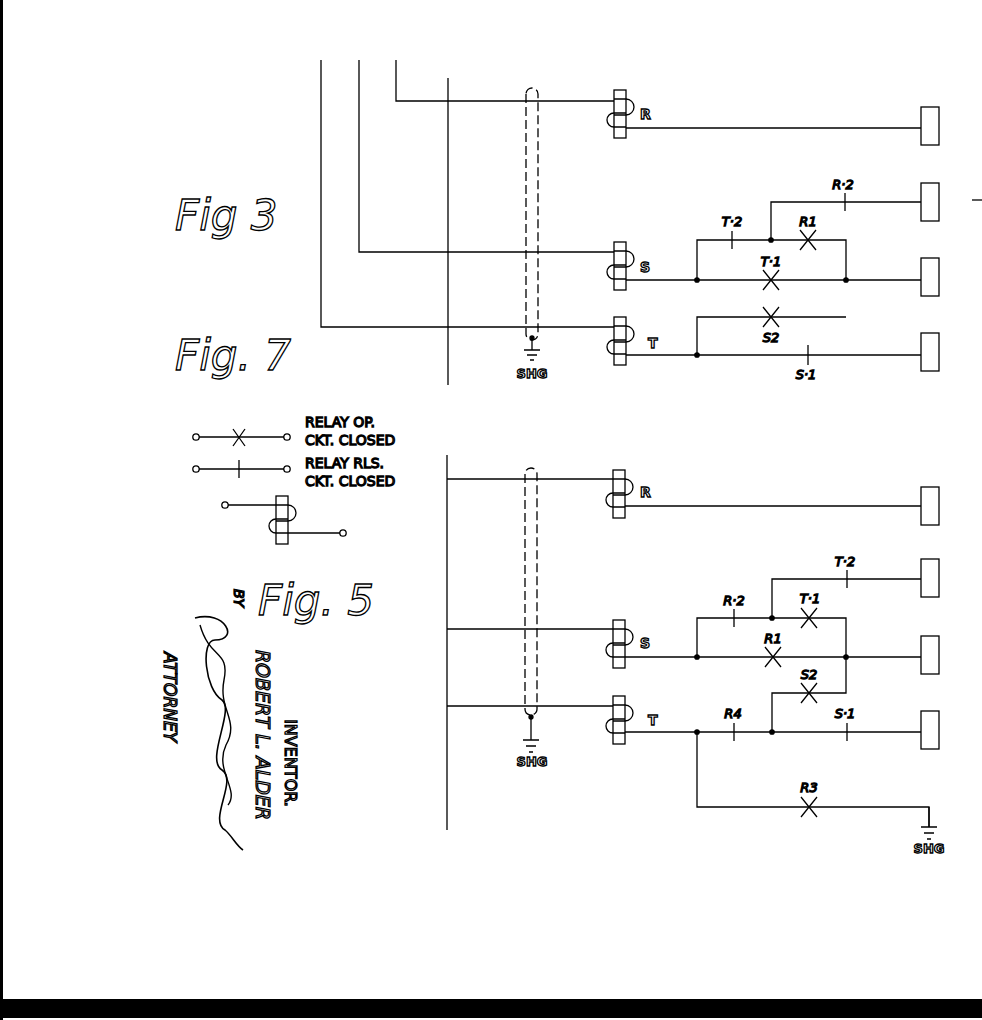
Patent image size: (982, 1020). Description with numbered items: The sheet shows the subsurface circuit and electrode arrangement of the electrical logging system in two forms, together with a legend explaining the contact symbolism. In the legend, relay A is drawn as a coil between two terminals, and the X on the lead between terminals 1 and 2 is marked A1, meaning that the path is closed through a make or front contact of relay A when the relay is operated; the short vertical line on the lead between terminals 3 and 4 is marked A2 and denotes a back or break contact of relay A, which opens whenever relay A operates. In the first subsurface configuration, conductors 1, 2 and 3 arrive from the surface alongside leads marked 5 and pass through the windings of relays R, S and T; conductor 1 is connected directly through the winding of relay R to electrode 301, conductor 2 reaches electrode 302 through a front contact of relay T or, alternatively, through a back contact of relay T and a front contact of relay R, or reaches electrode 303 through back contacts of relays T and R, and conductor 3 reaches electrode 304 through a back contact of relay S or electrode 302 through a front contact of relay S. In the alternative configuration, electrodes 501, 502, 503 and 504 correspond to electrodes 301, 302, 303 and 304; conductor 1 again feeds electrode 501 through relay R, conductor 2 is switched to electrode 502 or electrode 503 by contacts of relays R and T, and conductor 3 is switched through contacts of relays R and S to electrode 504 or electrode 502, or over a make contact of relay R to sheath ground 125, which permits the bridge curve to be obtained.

In FIG. 3, the conductor 1 is at (396, 108).
In FIG. 7, the conductor 1 is at (196, 428).
In FIG. 5, the conductor 1 is at (473, 482).
In FIG. 3, the conductor 2 is at (359, 108).
In FIG. 7, the conductor 2 is at (287, 428).
In FIG. 5, the conductor 2 is at (476, 627).
In FIG. 3, the conductor 3 is at (321, 108).
In FIG. 7, the conductor 3 is at (196, 460).
In FIG. 5, the conductor 3 is at (476, 702).
In FIG. 7, the terminal 4 is at (287, 460).
In FIG. 3, the bus connection to FIG. 5 is at (448, 78).
In FIG. 5, the bus connection to FIG. 5 is at (447, 455).
In FIG. 3, the electrode 301 is at (939, 131).
In FIG. 3, the electrode 302 is at (939, 281).
In FIG. 3, the electrode 303 is at (939, 201).
In FIG. 3, the electrode 304 is at (936, 366).
In FIG. 5, the electrode 501 is at (939, 500).
In FIG. 5, the electrode 502 is at (939, 582).
In FIG. 5, the electrode 503 is at (939, 650).
In FIG. 5, the electrode 504 is at (936, 745).
In FIG. 5, the sheath ground 125 is at (941, 829).
In FIG. 7, the make contact of relay A A1 is at (243, 431).
In FIG. 7, the back contact of relay A A2 is at (241, 462).
In FIG. 7, the relay A is at (290, 506).